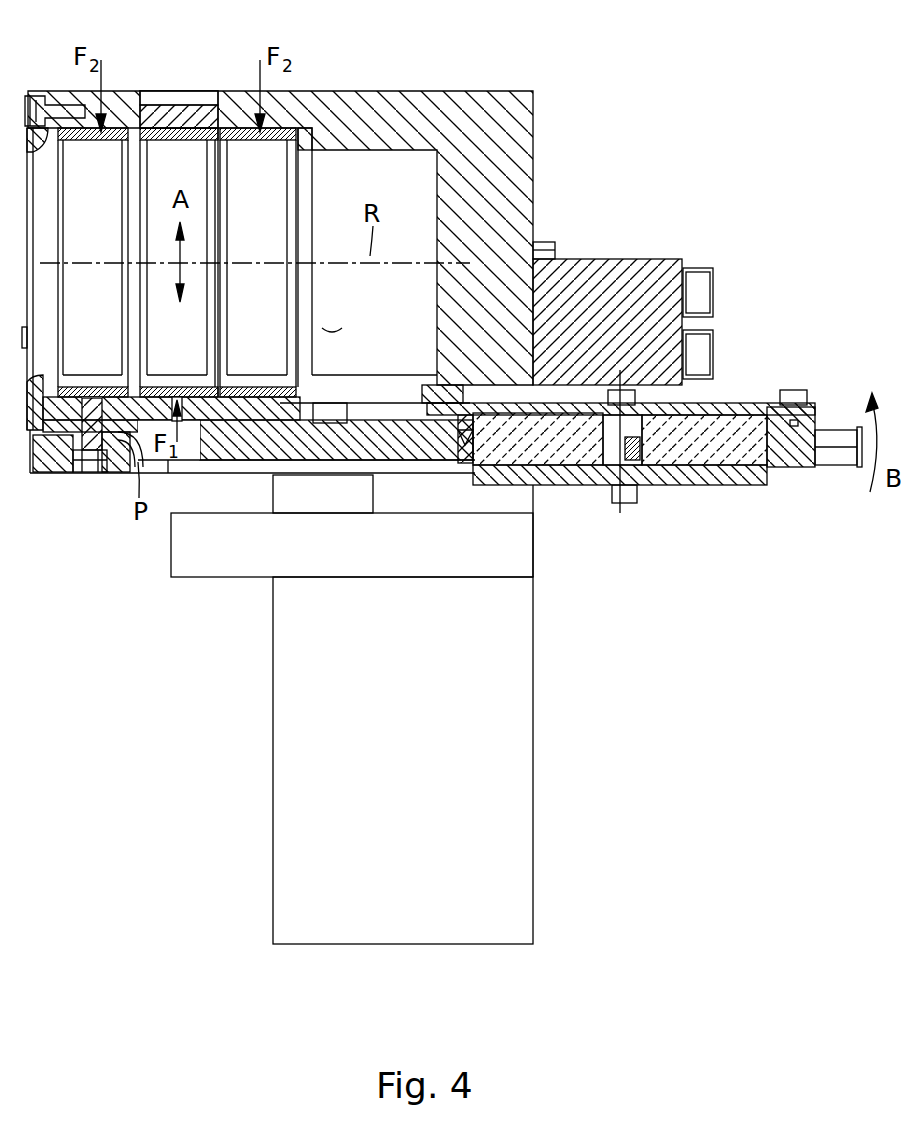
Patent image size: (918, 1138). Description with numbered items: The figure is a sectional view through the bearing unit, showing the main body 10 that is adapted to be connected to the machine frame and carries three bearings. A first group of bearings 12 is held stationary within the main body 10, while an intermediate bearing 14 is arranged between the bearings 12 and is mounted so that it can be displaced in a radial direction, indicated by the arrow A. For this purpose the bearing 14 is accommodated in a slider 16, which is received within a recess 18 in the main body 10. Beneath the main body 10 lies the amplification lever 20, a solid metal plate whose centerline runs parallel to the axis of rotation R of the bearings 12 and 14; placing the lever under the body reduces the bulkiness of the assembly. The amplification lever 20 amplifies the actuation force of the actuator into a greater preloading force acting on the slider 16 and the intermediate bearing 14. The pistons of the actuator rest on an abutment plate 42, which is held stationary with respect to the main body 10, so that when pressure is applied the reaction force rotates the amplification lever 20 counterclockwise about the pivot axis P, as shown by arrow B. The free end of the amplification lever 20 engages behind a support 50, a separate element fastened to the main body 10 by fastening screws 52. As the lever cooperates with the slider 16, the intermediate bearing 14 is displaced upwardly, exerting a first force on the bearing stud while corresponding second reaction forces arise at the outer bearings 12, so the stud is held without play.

The main body 10 is at (443, 100).
The bearings 12 is at (118, 128).
The bearing 14 is at (178, 128).
The slider 16 is at (155, 110).
The recess 18 is at (208, 96).
The amplification lever 20 is at (242, 462).
The abutment plate 42 is at (697, 482).
The support 50 is at (50, 462).
The fastening screws 52 is at (103, 465).